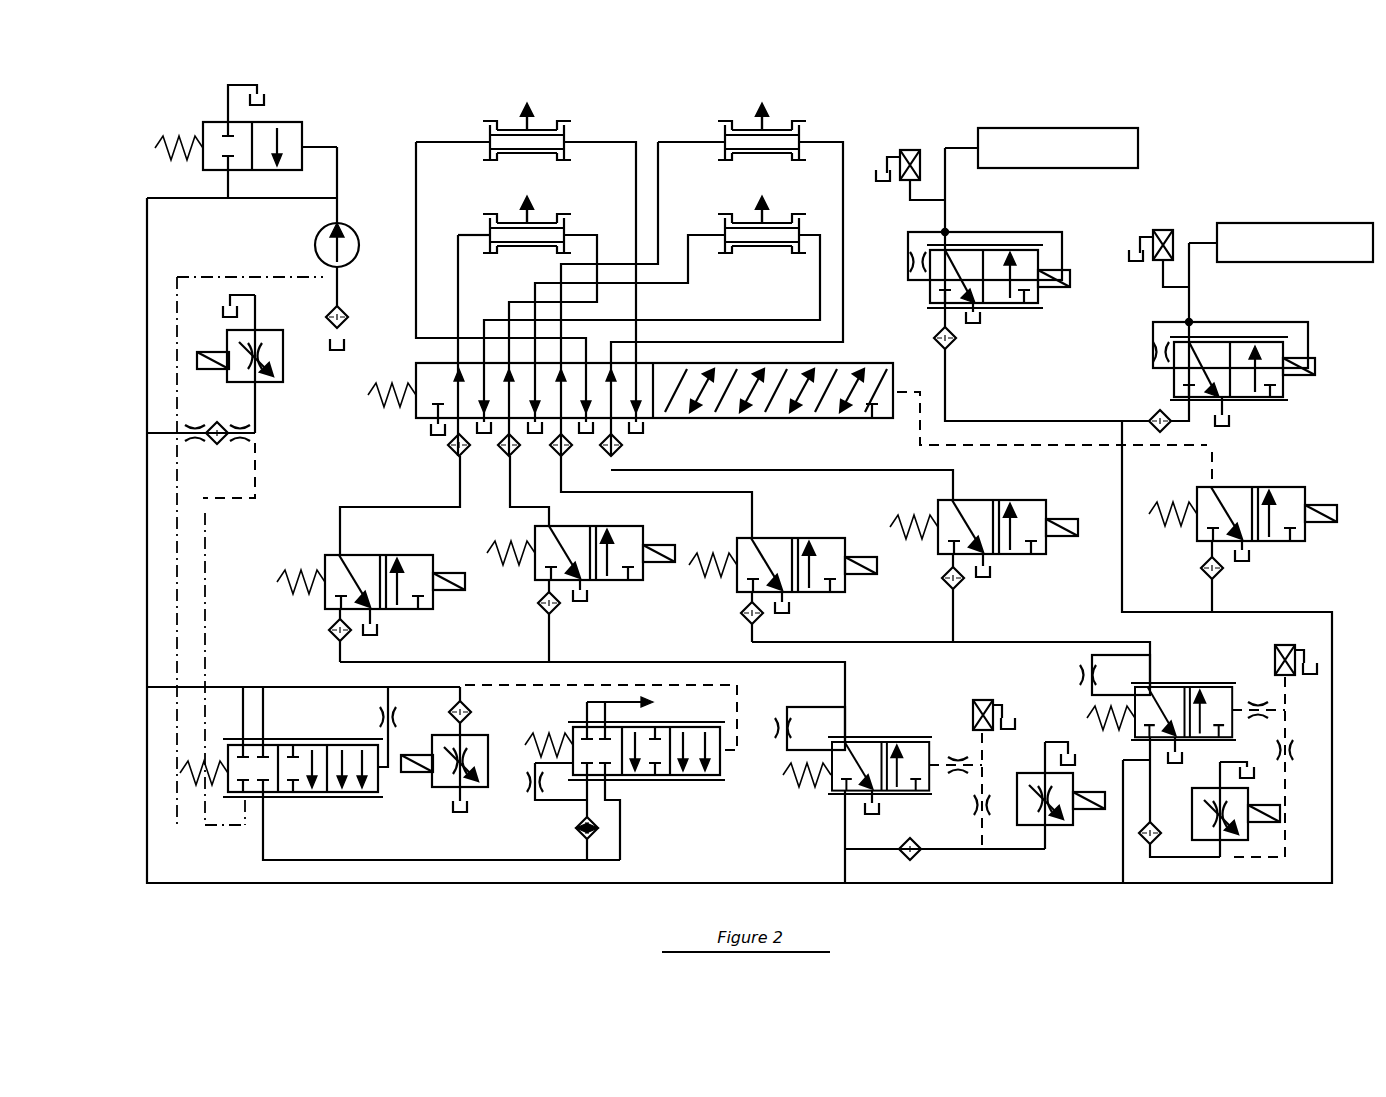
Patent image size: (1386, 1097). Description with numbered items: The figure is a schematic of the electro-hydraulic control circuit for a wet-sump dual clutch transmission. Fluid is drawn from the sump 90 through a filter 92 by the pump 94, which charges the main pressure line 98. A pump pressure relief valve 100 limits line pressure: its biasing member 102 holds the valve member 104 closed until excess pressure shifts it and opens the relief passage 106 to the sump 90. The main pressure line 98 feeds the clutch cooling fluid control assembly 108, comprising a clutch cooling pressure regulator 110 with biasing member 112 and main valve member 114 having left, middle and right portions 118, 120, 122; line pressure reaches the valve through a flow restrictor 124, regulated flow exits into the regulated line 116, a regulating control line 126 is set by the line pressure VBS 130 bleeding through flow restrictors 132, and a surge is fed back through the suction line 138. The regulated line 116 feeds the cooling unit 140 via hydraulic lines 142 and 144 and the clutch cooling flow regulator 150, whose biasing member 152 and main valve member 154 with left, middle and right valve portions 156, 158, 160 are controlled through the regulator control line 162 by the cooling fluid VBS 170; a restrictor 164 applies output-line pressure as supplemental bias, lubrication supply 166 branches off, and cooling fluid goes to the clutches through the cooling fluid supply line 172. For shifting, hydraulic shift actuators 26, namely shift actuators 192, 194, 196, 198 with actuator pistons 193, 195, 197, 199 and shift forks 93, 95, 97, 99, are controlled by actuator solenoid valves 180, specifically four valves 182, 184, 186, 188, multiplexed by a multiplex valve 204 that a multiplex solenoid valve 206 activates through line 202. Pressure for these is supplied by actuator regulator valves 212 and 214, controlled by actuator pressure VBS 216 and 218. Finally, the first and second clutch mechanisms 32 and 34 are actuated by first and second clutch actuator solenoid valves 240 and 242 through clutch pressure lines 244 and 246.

The hydraulic shift actuators 26 is at (652, 154).
The first clutch mechanism 32 is at (1236, 279).
The second clutch mechanism 34 is at (1003, 240).
The sump 90 is at (264, 99).
The filter 92 is at (348, 315).
The shift fork 93 is at (518, 214).
The pump 94 is at (352, 226).
The shift fork 95 is at (743, 213).
The shift fork 97 is at (518, 121).
The main pressure line 98 is at (148, 245).
The shift fork 99 is at (739, 120).
The pump pressure relief valve 100 is at (265, 170).
The biasing member 102 is at (180, 155).
The valve member 104 is at (246, 139).
The relief passage 106 is at (226, 196).
The clutch cooling fluid control assembly 108 is at (400, 736).
The clutch cooling pressure regulator 110 is at (288, 762).
The biasing member 112 is at (200, 790).
The main valve member 114 is at (380, 787).
The outlet line 116 is at (430, 860).
The left portion 118 is at (268, 745).
The middle portion 120 is at (313, 748).
The right portion 122 is at (330, 797).
The flow restrictor 124 is at (380, 717).
The regulating control line 126 is at (207, 520).
The line pressure VBS 130 is at (268, 388).
The flow restrictors 132 is at (196, 443).
The suction line 138 is at (240, 275).
The cooling unit 140 is at (575, 828).
The hydraulic line 142 is at (580, 858).
The output line 144 is at (580, 800).
The clutch cooling flow regulator 150 is at (745, 736).
The biasing member 152 is at (528, 725).
The main valve member 154 is at (724, 762).
The left valve portion 156 is at (620, 785).
The middle valve section 158 is at (640, 782).
The right valve section 160 is at (690, 782).
The regulator control line 162 is at (492, 688).
The restrictor 164 is at (530, 780).
The lubrication supply 166 is at (512, 803).
The cooling fluid VBS 170 is at (432, 737).
The cooling fluid supply line 172 is at (640, 700).
The actuator solenoid valves 180 is at (693, 545).
The actuator solenoid valve 182 is at (382, 595).
The actuator solenoid valve 184 is at (586, 582).
The actuator solenoid valve 186 is at (795, 576).
The actuator solenoid valve 188 is at (991, 560).
The shift actuator 192 is at (513, 213).
The actuator piston 193 is at (488, 233).
The shift actuator 194 is at (753, 214).
The actuator piston 195 is at (723, 233).
The shift actuator 196 is at (507, 120).
The actuator piston 197 is at (488, 140).
The shift actuator 198 is at (753, 121).
The actuator piston 199 is at (723, 140).
The line 202 is at (892, 446).
The multiplex valve 204 is at (638, 299).
The multiplex solenoid valve 206 is at (1232, 534).
The actuator regulator valve 212 is at (931, 775).
The actuator regulator valve 214 is at (1170, 700).
The actuator pressure VBS 216 is at (1055, 825).
The actuator pressure VBS 218 is at (1240, 838).
The first clutch actuator solenoid valve 240 is at (1230, 311).
The second clutch actuator solenoid valve 242 is at (1003, 265).
The clutch pressure line 244 is at (1200, 300).
The clutch pressure line 246 is at (948, 205).